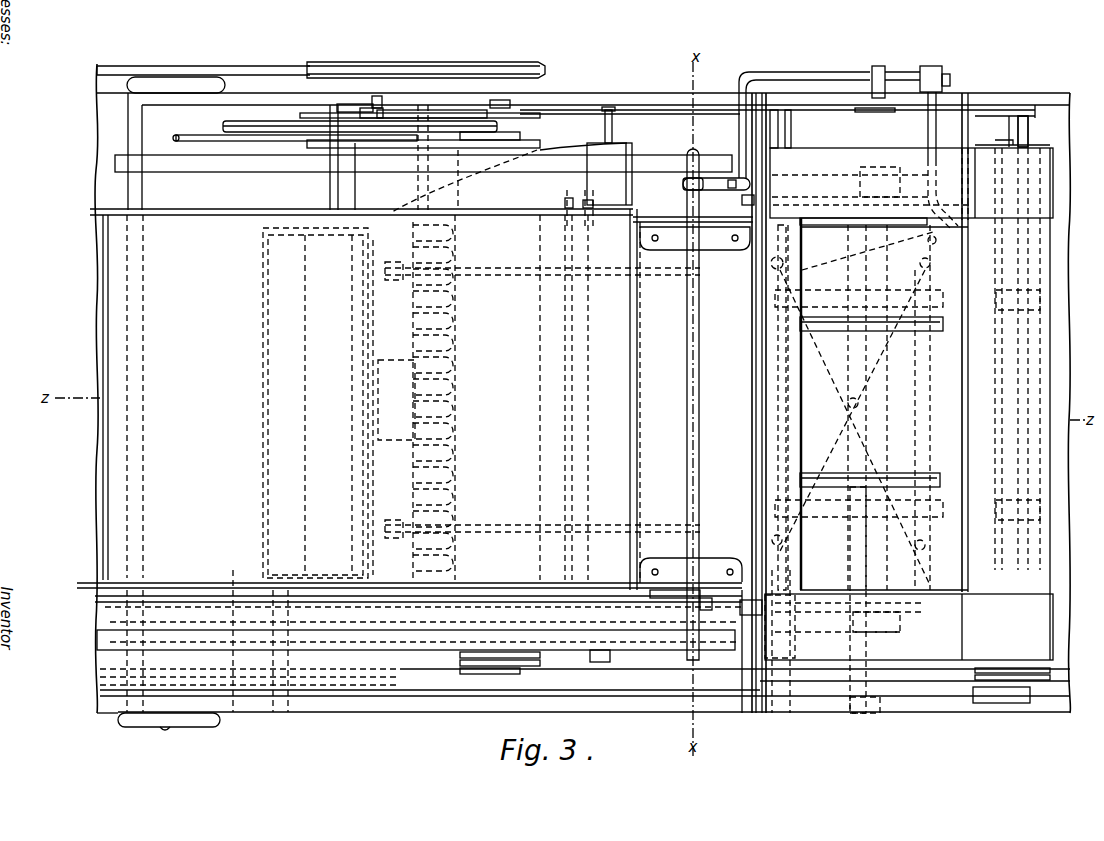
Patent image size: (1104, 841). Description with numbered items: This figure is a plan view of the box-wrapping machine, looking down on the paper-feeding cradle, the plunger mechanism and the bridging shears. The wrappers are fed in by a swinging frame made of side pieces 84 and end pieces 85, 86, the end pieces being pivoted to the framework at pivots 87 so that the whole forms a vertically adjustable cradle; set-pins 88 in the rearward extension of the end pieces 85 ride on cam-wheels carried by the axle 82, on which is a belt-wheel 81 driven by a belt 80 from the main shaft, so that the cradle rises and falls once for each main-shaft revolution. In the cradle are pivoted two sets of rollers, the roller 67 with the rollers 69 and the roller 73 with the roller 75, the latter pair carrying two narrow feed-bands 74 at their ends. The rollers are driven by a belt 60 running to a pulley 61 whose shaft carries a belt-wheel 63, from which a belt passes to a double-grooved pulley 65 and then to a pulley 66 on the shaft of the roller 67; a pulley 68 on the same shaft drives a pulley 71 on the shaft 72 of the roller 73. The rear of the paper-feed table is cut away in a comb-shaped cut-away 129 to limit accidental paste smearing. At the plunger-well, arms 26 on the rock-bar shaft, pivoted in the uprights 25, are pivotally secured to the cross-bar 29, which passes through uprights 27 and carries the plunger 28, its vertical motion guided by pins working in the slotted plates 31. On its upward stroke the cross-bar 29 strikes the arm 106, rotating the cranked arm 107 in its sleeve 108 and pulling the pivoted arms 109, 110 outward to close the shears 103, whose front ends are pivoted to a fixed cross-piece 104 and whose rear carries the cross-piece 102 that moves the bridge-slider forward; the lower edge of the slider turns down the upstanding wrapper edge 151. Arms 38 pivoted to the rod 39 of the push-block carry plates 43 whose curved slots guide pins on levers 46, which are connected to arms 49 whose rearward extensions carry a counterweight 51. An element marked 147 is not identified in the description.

The belt 80 is at (237, 66).
The belt-wheel 81 is at (460, 66).
The uprights 25 is at (205, 735).
The pivots 87 is at (348, 104).
The set-pins 88 is at (374, 96).
The axle 82 is at (420, 84).
The end pieces 86 is at (476, 108).
The side pieces 84 is at (653, 105).
The end pieces 85 is at (955, 110).
The belt-wheel 63 is at (224, 125).
The pulley 61 is at (320, 141).
The belt 60 is at (174, 137).
The double-grooved pulley 65 is at (335, 121).
The pulley 66 is at (540, 141).
The arms 26 is at (416, 402).
The counterweight 51 is at (339, 403).
The upstanding edge of the wrapper 151 is at (385, 407).
The comb-shaped cut-away 129 is at (433, 400).
The roller 67 is at (497, 397).
The guide 147 is at (556, 397).
The rollers 69 is at (612, 399).
The arms 49 is at (510, 270).
The plunger 28 is at (709, 404).
The cross-bar 29 is at (700, 500).
The uprights 27 is at (695, 404).
The arm 106 is at (716, 192).
The plates 31 is at (657, 606).
The arm 107 is at (783, 78).
The socket or sleeve 108 is at (880, 68).
The arm 109 is at (924, 104).
The arm 110 is at (926, 160).
The shaft 72 is at (1012, 142).
The shears 103 is at (848, 405).
The cross-piece 102 is at (926, 437).
The fixed cross-piece 104 is at (780, 407).
The roller 73 is at (1050, 478).
The feed-bands 74 is at (909, 402).
The arms 38 is at (835, 632).
The plates 43 is at (877, 400).
The rod 39 is at (878, 565).
The levers 46 is at (731, 607).
The roller 75 is at (780, 641).
The pulley 71 is at (1046, 681).
The pulley 68 is at (460, 670).